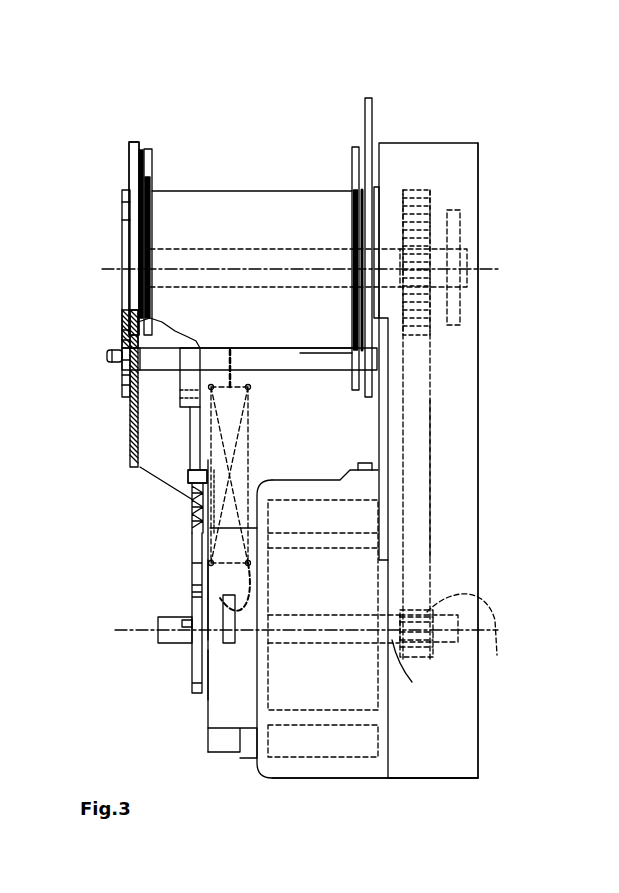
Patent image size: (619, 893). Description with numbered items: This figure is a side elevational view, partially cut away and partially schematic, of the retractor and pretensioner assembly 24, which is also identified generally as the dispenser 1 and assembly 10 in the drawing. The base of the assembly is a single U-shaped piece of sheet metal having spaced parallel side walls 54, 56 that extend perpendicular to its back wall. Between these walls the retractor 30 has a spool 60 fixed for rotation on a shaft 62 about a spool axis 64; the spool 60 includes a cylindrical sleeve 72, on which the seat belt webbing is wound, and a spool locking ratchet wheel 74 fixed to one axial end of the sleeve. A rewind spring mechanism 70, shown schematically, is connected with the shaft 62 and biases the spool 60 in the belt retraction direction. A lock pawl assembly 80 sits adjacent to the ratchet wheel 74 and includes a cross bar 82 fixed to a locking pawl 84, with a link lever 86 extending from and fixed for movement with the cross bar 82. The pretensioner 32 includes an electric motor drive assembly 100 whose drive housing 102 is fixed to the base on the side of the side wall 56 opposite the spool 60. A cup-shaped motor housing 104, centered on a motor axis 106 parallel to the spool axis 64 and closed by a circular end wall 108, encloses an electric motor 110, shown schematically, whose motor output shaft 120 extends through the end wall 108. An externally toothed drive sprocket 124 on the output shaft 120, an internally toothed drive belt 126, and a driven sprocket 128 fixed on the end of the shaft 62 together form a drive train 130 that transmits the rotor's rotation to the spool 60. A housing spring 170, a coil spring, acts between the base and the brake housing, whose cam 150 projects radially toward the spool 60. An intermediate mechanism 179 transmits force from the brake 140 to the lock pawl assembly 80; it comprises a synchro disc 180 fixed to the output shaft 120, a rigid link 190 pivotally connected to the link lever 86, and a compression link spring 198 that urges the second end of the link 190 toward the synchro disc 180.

The web dispenser 1 is at (614, 203).
The dispenser assembly 10 is at (104, 622).
The retractor and pretensioner assembly 24 is at (107, 600).
The retractor 30 is at (172, 121).
The pretensioner 32 is at (107, 685).
The side wall 54 is at (132, 450).
The side wall 56 is at (373, 108).
The spool 60 is at (153, 157).
The shaft 62 is at (298, 247).
The spool axis 64 is at (488, 263).
The rewind spring mechanism 70 is at (453, 210).
The cylindrical sleeve 72 is at (263, 190).
The spool locking ratchet wheel 74 is at (123, 207).
The lock pawl assembly 80 is at (106, 358).
The cross bar 82 is at (272, 365).
The locking pawl 84 is at (125, 337).
The link lever 86 is at (182, 377).
The electric motor drive assembly 100 is at (512, 417).
The drive housing 102 is at (480, 758).
The motor housing 104 is at (367, 780).
The motor axis 106 is at (490, 640).
The end wall 108 is at (257, 712).
The electric motor 110 is at (300, 742).
The motor output shaft 120 is at (411, 673).
The drive sprocket 124 is at (437, 614).
The drive belt 126 is at (430, 390).
The driven sprocket 128 is at (430, 220).
The drive train 130 is at (432, 472).
The brake 140 is at (200, 705).
The cam 150 is at (190, 477).
The housing spring 170 is at (248, 452).
The intermediate mechanism 179 is at (116, 539).
The synchro disc 180 is at (191, 660).
The link 190 is at (193, 549).
The link spring 198 is at (192, 505).